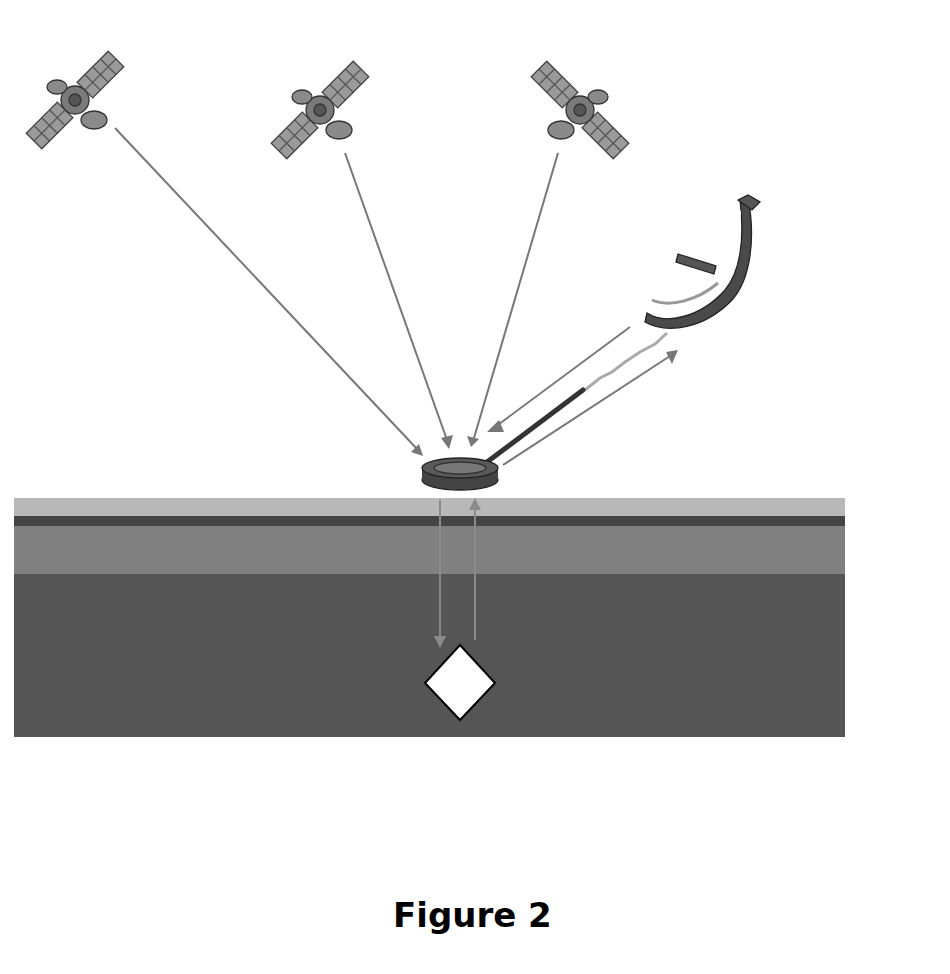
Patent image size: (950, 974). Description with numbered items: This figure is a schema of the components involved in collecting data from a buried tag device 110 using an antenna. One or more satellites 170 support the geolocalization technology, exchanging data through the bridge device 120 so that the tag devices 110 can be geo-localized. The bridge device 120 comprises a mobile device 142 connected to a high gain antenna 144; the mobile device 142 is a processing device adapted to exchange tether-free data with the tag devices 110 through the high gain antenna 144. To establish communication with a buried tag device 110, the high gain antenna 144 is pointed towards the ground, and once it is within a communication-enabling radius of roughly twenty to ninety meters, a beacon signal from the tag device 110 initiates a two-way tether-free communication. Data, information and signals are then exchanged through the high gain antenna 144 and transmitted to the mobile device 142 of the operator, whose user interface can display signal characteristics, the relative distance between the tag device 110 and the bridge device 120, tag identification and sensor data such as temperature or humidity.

The satellite 170 is at (542, 62).
The mobile device 142 is at (695, 308).
The bridge device 120 is at (655, 425).
The high gain antenna 144 is at (493, 476).
The tag device 110 is at (462, 703).